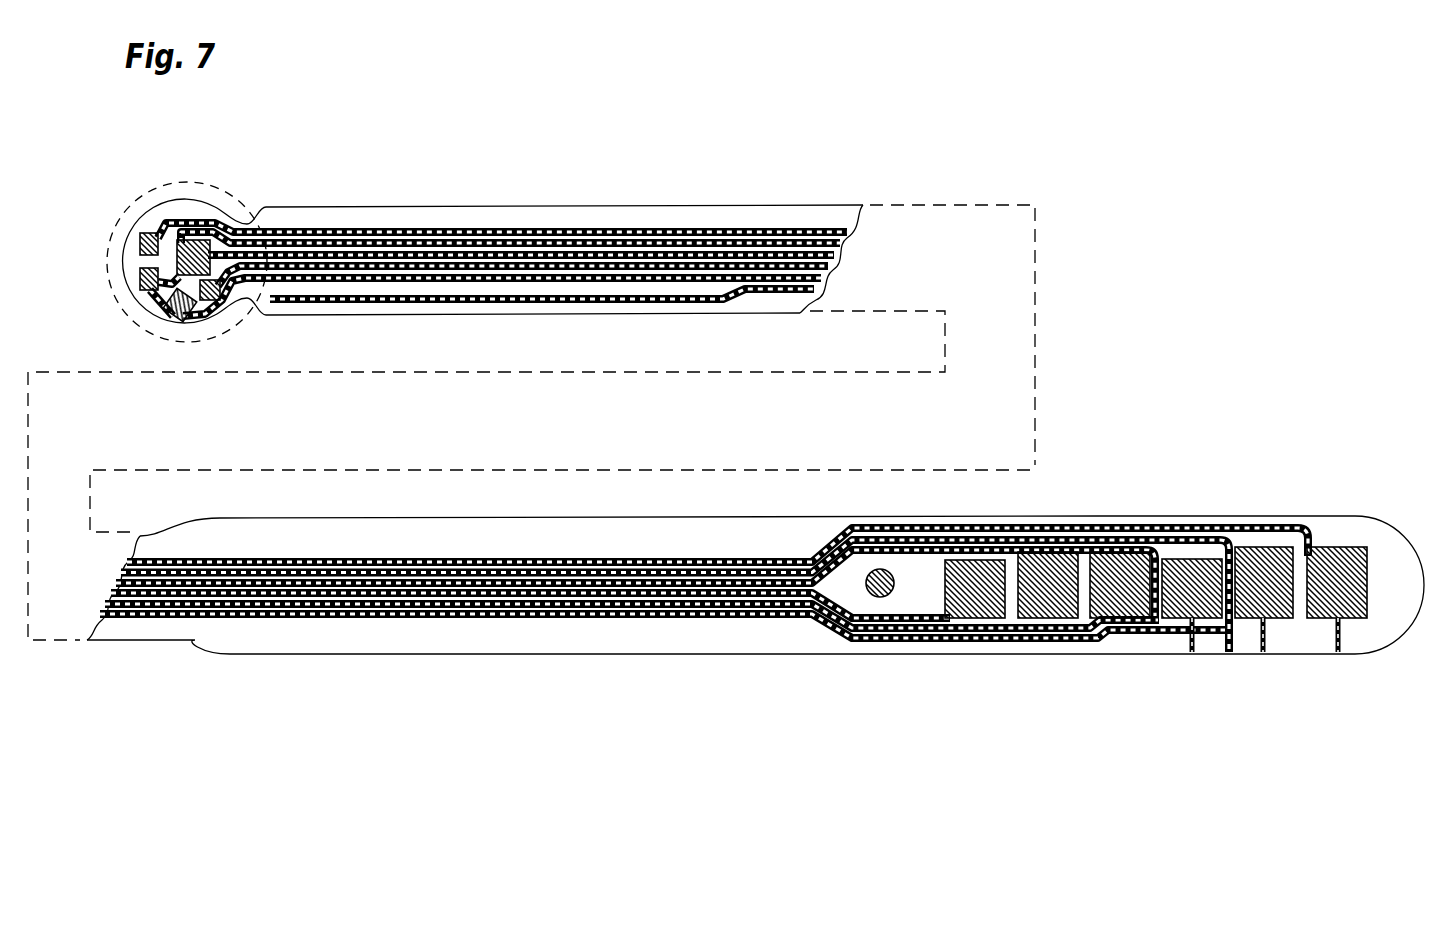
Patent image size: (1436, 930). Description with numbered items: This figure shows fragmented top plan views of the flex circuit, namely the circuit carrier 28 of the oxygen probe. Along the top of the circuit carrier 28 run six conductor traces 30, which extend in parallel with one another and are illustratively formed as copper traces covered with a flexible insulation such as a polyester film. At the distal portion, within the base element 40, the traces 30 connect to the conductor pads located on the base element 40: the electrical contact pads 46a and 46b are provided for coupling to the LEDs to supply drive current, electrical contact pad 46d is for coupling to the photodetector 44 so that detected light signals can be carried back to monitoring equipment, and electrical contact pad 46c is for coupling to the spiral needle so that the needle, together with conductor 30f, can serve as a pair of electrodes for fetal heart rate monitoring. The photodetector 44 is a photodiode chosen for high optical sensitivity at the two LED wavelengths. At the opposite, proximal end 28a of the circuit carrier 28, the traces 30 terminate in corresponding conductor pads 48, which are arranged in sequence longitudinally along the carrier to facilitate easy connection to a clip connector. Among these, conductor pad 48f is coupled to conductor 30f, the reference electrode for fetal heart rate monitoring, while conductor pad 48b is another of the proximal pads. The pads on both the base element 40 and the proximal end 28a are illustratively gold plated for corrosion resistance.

The circuit carrier 28 is at (556, 206).
The proximal end 28a is at (1035, 523).
The conductors 30 is at (605, 606).
The conductor 30f is at (386, 304).
The base element 40 is at (228, 196).
The photodetector 44 is at (193, 247).
The electrical contact pad 46a is at (140, 240).
The electrical contact pad 46b is at (140, 282).
The electrical contact pad 46c is at (174, 314).
The electrical contact pad 46d is at (216, 297).
The conductor pads 48 is at (1330, 604).
The conductor pad 48b is at (1062, 552).
The conductor pad 48f is at (1173, 559).